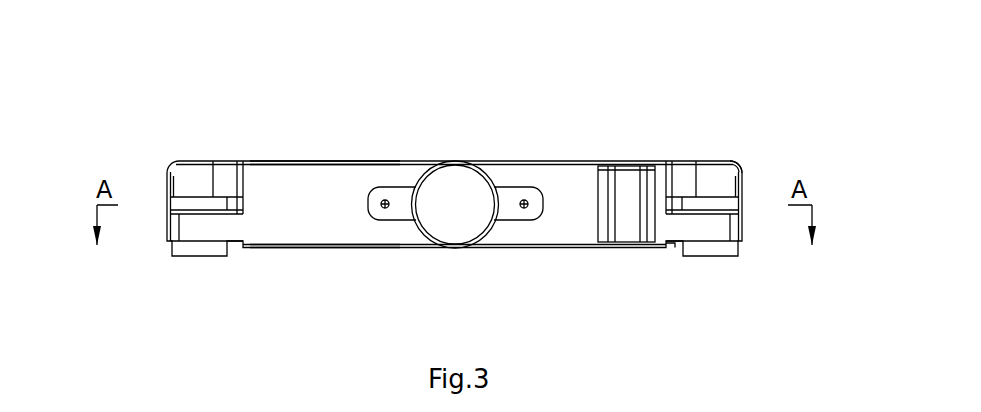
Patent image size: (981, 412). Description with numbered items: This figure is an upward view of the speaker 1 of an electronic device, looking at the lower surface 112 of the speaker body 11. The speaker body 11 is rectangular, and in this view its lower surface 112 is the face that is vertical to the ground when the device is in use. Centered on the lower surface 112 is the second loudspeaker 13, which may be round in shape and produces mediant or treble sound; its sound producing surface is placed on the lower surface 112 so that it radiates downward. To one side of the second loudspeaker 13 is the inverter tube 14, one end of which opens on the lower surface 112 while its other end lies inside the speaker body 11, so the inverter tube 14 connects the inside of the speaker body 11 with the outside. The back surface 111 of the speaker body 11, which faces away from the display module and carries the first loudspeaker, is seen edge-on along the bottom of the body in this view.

The speaker 1 is at (137, 154).
The speaker body 11 is at (742, 158).
The back surface 111 is at (291, 247).
The lower surface 112 is at (308, 192).
The second loudspeaker 13 is at (457, 203).
The inverter tube 14 is at (628, 206).